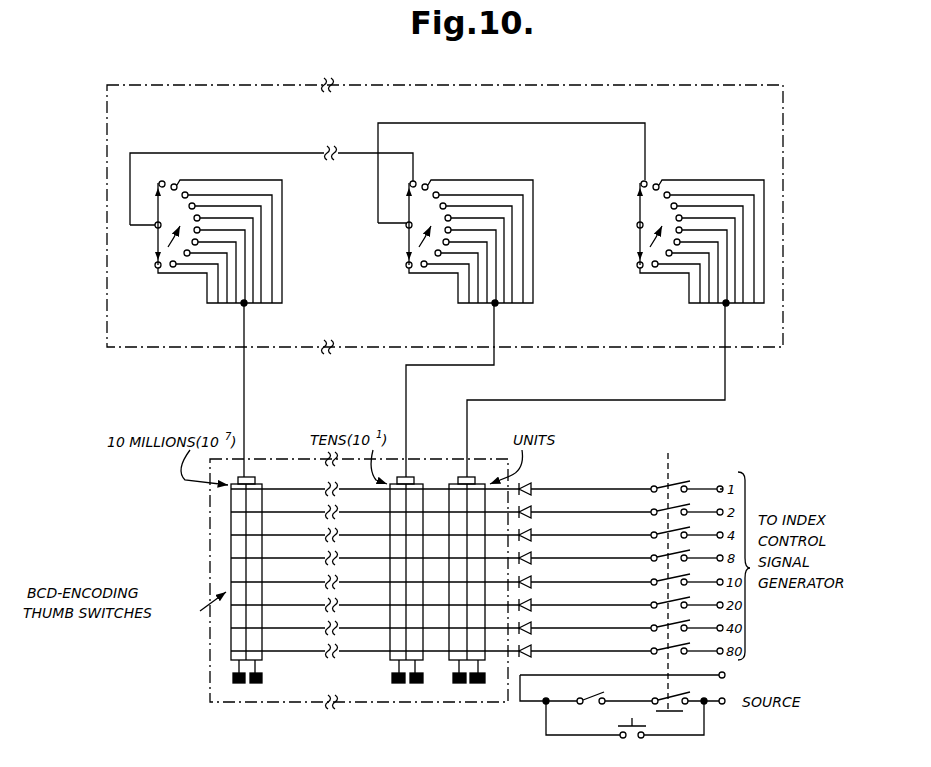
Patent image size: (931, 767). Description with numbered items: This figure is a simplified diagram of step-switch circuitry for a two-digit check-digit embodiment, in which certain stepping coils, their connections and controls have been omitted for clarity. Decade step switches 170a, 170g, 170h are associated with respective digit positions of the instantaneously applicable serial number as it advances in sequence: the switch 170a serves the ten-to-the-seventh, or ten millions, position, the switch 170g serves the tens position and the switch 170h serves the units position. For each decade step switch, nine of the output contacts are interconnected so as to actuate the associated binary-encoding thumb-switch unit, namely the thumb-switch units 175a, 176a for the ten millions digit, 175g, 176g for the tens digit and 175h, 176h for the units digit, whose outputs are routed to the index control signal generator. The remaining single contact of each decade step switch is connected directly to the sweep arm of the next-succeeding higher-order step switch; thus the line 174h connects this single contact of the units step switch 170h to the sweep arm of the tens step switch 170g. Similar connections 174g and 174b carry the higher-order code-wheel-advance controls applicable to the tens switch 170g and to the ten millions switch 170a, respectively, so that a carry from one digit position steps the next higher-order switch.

The decade step switch 170a is at (145, 253).
The decade step switch 170g is at (393, 244).
The decade step switch 170h is at (625, 254).
The connection 174b is at (293, 140).
The connection 174g is at (348, 151).
The line 174h is at (554, 122).
The binary-encoding thumb-switch unit 175a is at (229, 651).
The binary-encoding thumb-switch unit 175g is at (389, 656).
The binary-encoding thumb-switch unit 175h is at (450, 664).
The binary-encoding thumb-switch unit 176a is at (266, 658).
The binary-encoding thumb-switch unit 176g is at (431, 663).
The binary-encoding thumb-switch unit 176h is at (491, 662).